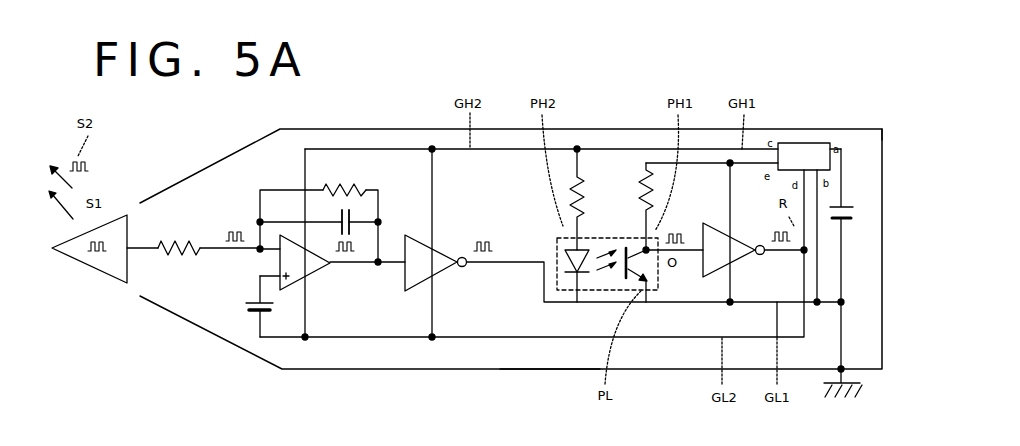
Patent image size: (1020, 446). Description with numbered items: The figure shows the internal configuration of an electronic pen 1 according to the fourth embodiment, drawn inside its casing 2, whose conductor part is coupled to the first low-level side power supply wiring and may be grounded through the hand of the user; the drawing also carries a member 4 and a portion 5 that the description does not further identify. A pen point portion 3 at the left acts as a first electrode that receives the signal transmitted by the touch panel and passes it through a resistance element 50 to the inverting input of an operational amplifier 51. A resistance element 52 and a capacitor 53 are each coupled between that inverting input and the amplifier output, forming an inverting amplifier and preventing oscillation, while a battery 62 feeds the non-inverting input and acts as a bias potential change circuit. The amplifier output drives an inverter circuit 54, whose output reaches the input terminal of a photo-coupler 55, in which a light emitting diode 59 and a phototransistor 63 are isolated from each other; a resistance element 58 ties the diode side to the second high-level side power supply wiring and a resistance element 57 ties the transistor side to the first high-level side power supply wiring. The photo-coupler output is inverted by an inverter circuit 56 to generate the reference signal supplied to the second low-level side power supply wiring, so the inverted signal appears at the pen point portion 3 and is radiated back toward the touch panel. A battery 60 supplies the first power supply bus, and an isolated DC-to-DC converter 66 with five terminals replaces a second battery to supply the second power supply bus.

The electronic pen 1 is at (857, 129).
The casing 2 is at (543, 372).
The pen point portion 3 is at (83, 277).
The housing 4 is at (205, 335).
The wiring 5 is at (611, 137).
The resistance element 50 is at (177, 238).
The operational amplifier 51 is at (312, 279).
The resistance element 52 is at (342, 178).
The capacitor 53 is at (335, 217).
The inverter circuit 54 is at (440, 278).
The photo-coupler 55 is at (615, 234).
The inverter circuit 56 is at (739, 237).
The resistance element 57 is at (653, 175).
The resistance element 58 is at (568, 188).
The light emitting diode 59 is at (580, 277).
The battery 60 is at (852, 204).
The battery 62 is at (266, 341).
The phototransistor 63 is at (636, 254).
The DC-to-DC converter 66 is at (805, 143).